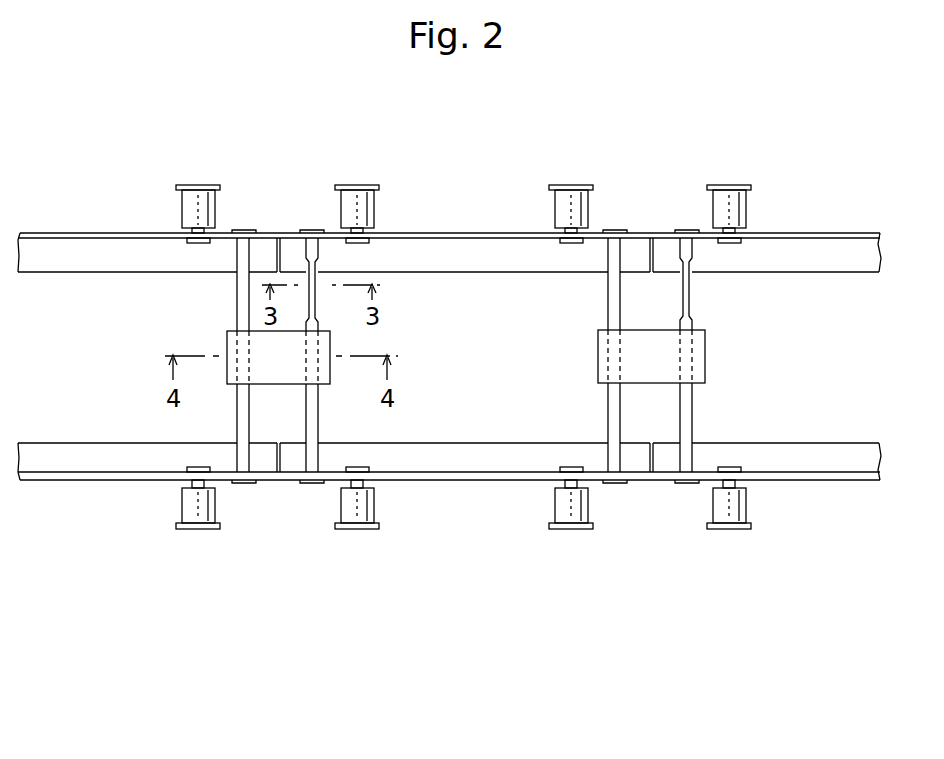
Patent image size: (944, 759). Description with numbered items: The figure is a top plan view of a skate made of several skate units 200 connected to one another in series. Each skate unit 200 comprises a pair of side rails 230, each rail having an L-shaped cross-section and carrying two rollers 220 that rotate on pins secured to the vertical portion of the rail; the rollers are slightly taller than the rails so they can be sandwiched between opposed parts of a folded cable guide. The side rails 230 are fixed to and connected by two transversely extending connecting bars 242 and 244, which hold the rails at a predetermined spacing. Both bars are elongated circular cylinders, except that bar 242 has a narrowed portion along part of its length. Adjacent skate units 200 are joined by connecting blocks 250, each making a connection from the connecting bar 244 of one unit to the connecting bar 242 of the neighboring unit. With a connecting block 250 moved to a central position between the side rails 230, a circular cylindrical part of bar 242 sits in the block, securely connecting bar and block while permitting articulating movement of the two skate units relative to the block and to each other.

The skate unit 200 is at (416, 519).
The roller 220 is at (188, 208).
The side rail 230 is at (466, 253).
The connecting bar 242 is at (318, 430).
The connecting bar 244 is at (240, 289).
The connecting block 250 is at (228, 340).